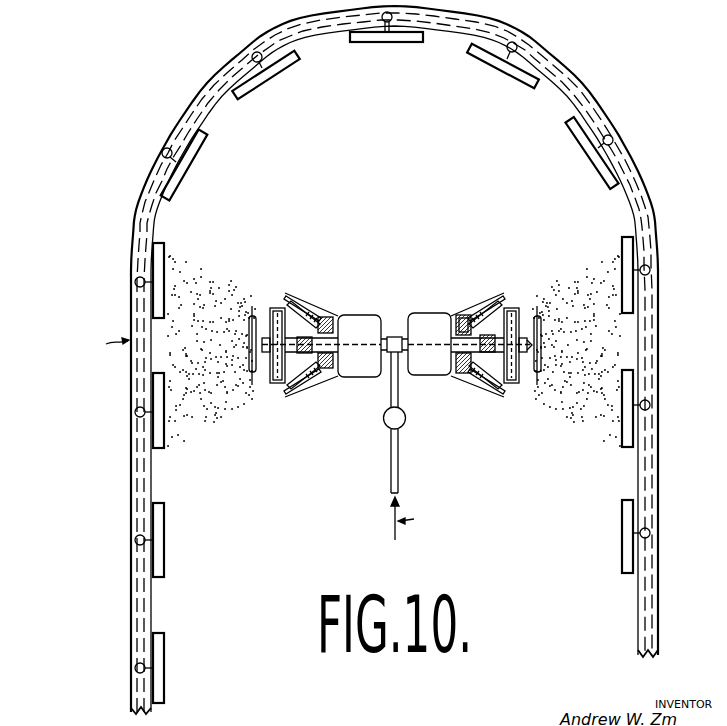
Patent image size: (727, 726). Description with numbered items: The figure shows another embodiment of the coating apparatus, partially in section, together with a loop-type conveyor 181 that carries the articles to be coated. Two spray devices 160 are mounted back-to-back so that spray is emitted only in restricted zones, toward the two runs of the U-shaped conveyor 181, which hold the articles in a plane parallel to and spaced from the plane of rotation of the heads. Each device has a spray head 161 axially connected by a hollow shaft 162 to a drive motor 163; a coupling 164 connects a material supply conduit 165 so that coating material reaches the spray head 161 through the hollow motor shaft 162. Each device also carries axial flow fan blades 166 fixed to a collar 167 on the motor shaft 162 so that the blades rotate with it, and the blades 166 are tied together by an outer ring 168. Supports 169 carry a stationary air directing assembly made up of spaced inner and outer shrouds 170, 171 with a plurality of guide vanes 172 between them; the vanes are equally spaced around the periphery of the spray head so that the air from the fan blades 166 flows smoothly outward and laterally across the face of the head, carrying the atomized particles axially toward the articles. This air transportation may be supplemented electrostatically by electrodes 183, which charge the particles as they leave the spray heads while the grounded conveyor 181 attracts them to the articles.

The spray device 160 is at (312, 301).
The spray head 161 is at (280, 307).
The hollow shaft 162 is at (487, 353).
The drive motor 163 is at (379, 377).
The coupling 164 is at (398, 336).
The material supply conduit 165 is at (388, 399).
The axial flow fan blades 166 is at (462, 327).
The collar 167 is at (338, 382).
The outer ring 168 is at (462, 374).
The supports 169 is at (332, 316).
The inner shroud 170 is at (507, 387).
The outer shroud 171 is at (287, 396).
The guide vanes 172 is at (288, 294).
The loop-type conveyor 181 is at (607, 110).
The electrodes 183 is at (250, 372).